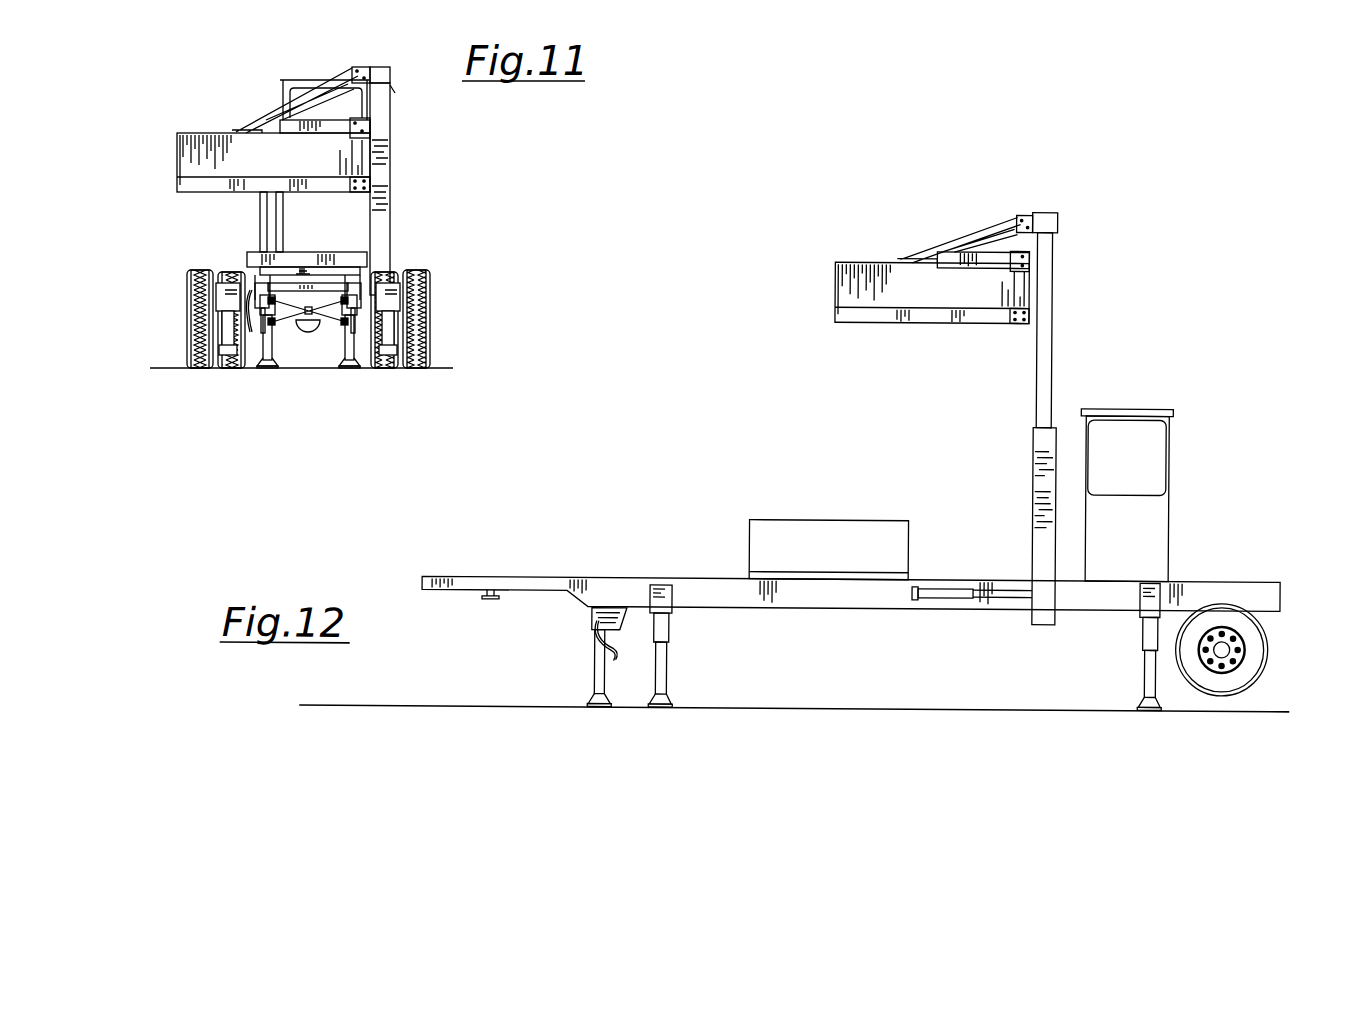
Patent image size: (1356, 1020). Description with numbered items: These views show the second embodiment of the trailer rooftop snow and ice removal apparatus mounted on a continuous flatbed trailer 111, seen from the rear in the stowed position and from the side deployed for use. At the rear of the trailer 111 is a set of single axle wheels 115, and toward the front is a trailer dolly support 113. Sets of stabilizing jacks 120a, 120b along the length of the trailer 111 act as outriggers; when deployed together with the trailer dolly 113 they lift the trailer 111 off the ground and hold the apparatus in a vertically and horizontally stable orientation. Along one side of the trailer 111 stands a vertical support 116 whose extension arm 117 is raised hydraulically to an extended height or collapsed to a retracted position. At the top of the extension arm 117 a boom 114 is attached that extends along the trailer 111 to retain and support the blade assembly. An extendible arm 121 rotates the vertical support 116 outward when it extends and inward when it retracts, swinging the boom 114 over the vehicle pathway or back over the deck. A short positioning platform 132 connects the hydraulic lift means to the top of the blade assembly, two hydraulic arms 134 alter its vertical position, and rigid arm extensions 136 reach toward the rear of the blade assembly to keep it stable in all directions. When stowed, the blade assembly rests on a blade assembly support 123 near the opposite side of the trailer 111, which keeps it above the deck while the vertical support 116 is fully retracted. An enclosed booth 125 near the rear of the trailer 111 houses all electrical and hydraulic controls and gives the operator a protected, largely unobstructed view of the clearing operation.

In FIG. 11, the flatbed trailer 111 is at (248, 258).
In FIG. 12, the flatbed trailer 111 is at (612, 579).
In FIG. 11, the trailer dolly support 113 is at (337, 368).
In FIG. 12, the trailer dolly support 113 is at (600, 690).
In FIG. 11, the boom 114 is at (382, 67).
In FIG. 12, the boom 114 is at (1052, 213).
In FIG. 11, the single axle wheels 115 is at (430, 290).
In FIG. 12, the single axle wheels 115 is at (1262, 643).
In FIG. 12, the vertical support 116 is at (1033, 562).
In FIG. 11, the extension arm 117 is at (381, 95).
In FIG. 12, the extension arm 117 is at (1042, 331).
In FIG. 11, the stabilizing jacks 120a is at (227, 368).
In FIG. 12, the stabilizing jacks 120a is at (664, 686).
In FIG. 12, the stabilizing jacks 120b is at (1148, 686).
In FIG. 12, the extendible arm 121 is at (950, 600).
In FIG. 11, the blade assembly support 123 is at (262, 224).
In FIG. 12, the blade assembly support 123 is at (800, 527).
In FIG. 11, the enclosed booth 125 is at (290, 85).
In FIG. 12, the enclosed booth 125 is at (1157, 519).
In FIG. 11, the positioning platform 132 is at (345, 128).
In FIG. 12, the positioning platform 132 is at (1000, 274).
In FIG. 11, the hydraulic arms 134 is at (333, 100).
In FIG. 12, the hydraulic arms 134 is at (1000, 232).
In FIG. 11, the rigid arm extensions 136 is at (256, 131).
In FIG. 12, the rigid arm extensions 136 is at (935, 262).